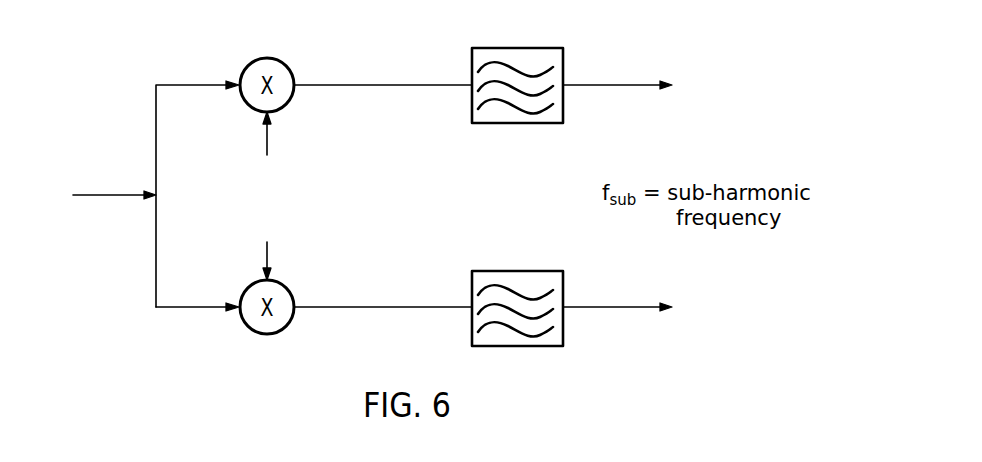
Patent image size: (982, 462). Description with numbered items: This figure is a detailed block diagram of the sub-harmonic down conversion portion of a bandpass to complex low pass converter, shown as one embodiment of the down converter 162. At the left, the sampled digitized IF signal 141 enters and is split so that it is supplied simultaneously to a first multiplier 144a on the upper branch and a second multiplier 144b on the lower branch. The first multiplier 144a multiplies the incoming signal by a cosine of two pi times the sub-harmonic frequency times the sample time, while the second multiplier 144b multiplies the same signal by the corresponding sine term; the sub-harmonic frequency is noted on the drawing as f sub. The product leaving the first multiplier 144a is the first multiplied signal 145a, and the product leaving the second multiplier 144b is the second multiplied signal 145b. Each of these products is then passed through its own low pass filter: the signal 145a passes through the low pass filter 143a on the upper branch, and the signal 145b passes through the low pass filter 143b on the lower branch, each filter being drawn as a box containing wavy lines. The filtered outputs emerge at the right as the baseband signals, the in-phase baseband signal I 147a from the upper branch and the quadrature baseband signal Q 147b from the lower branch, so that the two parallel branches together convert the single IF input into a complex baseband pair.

The sampled digitized IF signal 141 is at (97, 190).
The down converter 162 is at (108, 302).
The first multiplier 144a is at (271, 60).
The second multiplier 144b is at (278, 332).
The first multiplied signal 145a is at (354, 80).
The second multiplied signal 145b is at (328, 304).
The low pass filter 143a is at (540, 52).
The low pass filter 143b is at (489, 347).
The baseband signal I 147a is at (603, 81).
The baseband signal Q 147b is at (608, 311).